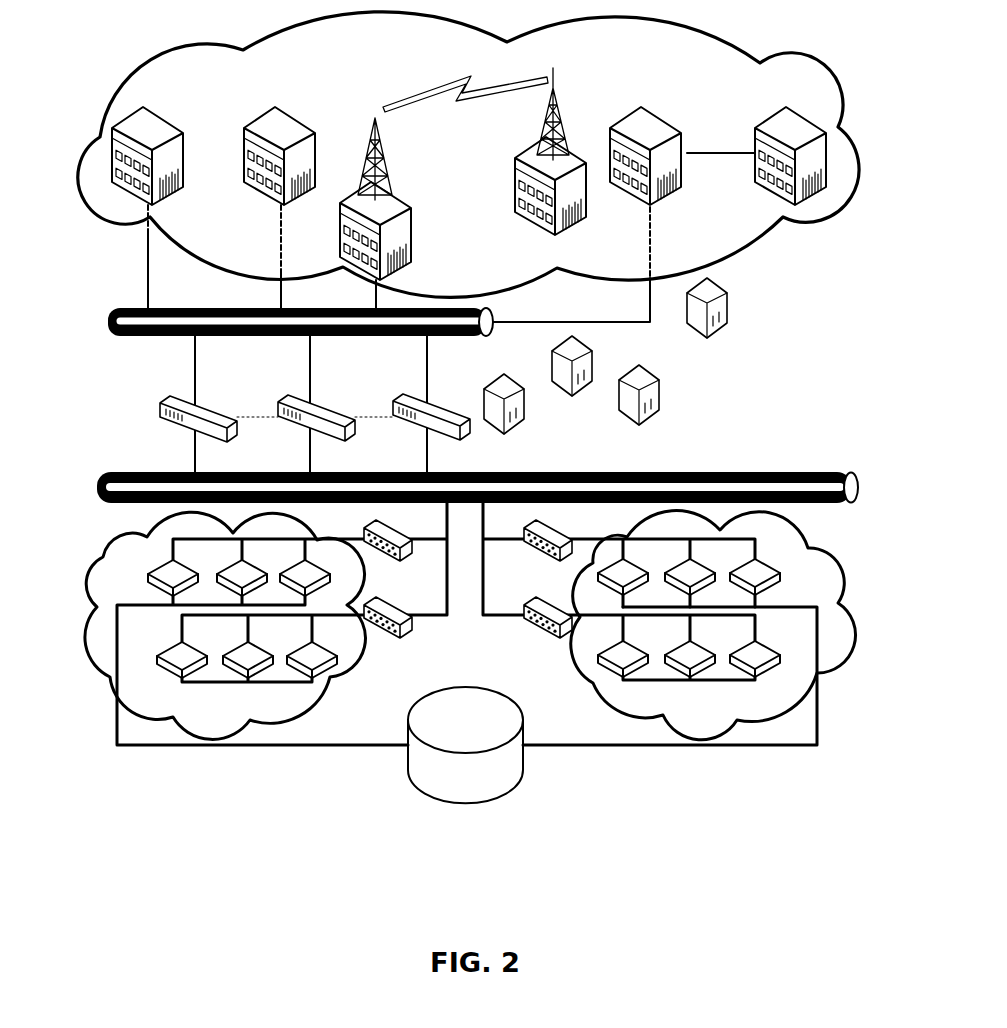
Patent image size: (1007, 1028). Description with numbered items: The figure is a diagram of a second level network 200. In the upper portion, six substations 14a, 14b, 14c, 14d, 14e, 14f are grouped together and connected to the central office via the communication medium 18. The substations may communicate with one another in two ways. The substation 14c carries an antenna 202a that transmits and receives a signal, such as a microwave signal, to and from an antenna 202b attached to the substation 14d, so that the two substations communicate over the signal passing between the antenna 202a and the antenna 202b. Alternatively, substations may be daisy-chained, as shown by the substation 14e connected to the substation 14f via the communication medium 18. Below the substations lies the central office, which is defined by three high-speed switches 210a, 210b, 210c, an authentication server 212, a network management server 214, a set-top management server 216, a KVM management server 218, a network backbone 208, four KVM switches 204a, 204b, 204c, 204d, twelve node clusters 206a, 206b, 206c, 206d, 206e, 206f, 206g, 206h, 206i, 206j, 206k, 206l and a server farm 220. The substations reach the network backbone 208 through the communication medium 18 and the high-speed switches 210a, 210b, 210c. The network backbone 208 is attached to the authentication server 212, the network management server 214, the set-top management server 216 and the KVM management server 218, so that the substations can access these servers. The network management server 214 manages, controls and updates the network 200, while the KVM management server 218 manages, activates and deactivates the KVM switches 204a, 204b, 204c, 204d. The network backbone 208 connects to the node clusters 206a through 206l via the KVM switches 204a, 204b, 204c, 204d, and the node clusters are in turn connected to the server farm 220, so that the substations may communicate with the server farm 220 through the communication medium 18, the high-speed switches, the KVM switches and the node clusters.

The substation 14a is at (145, 123).
The substation 14b is at (277, 123).
The substation 14c is at (410, 225).
The substation 14d is at (514, 171).
The substation 14e is at (658, 120).
The substation 14f is at (808, 192).
The antenna 202a is at (375, 118).
The antenna 202b is at (561, 91).
The communication medium 18 is at (122, 317).
The network backbone 208 is at (829, 480).
The high-speed switch 210a is at (171, 403).
The high-speed switch 210b is at (306, 407).
The high-speed switch 210c is at (401, 402).
The authentication server 212 is at (509, 418).
The network management server 214 is at (595, 370).
The set-top management server 216 is at (645, 383).
The KVM management server 218 is at (729, 302).
The KVM switch 204a is at (401, 546).
The KVM switch 204b is at (403, 623).
The KVM switch 204c is at (541, 606).
The KVM switch 204d is at (549, 531).
The node cluster 206a is at (173, 572).
The node cluster 206b is at (233, 587).
The node cluster 206c is at (307, 560).
The node cluster 206d is at (178, 654).
The node cluster 206e is at (247, 655).
The node cluster 206f is at (313, 655).
The node cluster 206g is at (632, 582).
The node cluster 206h is at (689, 568).
The node cluster 206i is at (767, 563).
The node cluster 206j is at (625, 650).
The node cluster 206k is at (692, 650).
The node cluster 206l is at (759, 650).
The server farm 220 is at (493, 764).
The second level network 200 is at (680, 866).